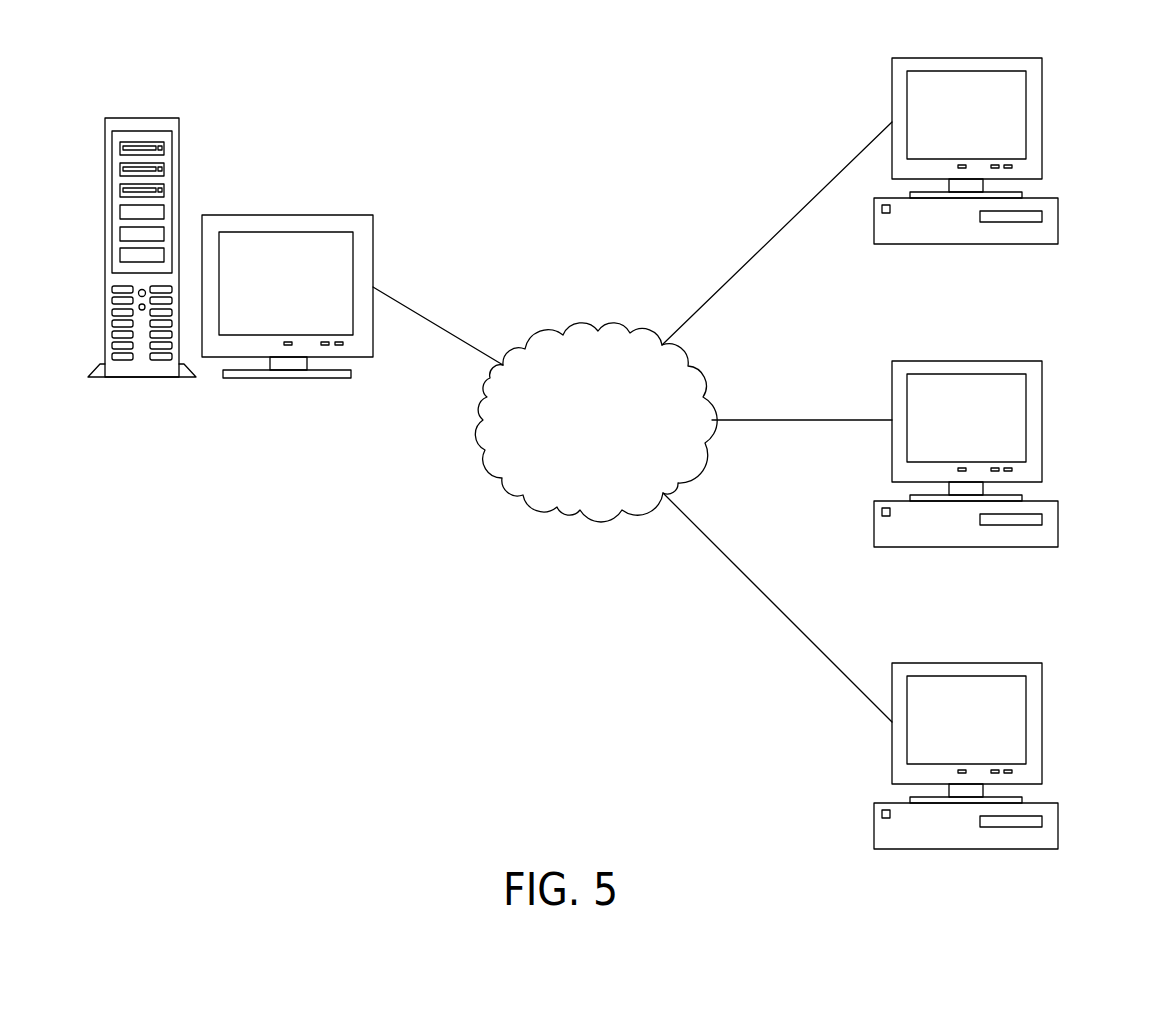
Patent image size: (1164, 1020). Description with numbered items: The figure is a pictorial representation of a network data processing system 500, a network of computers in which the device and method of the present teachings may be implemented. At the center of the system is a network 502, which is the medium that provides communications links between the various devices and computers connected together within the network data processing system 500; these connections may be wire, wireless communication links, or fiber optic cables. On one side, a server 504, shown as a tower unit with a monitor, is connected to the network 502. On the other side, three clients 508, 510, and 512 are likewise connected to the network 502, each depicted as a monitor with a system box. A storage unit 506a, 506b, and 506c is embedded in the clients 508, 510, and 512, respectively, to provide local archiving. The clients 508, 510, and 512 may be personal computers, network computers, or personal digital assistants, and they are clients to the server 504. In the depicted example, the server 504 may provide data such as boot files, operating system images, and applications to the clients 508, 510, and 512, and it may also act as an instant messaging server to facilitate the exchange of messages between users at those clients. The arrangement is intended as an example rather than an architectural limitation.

The network data processing system 500 is at (632, 399).
The network 502 is at (580, 319).
The server 504 is at (139, 117).
The storage unit 506a is at (1043, 215).
The storage unit 506b is at (1043, 518).
The storage unit 506c is at (1043, 820).
The client 508 is at (1043, 112).
The client 510 is at (1043, 415).
The client 512 is at (1043, 717).